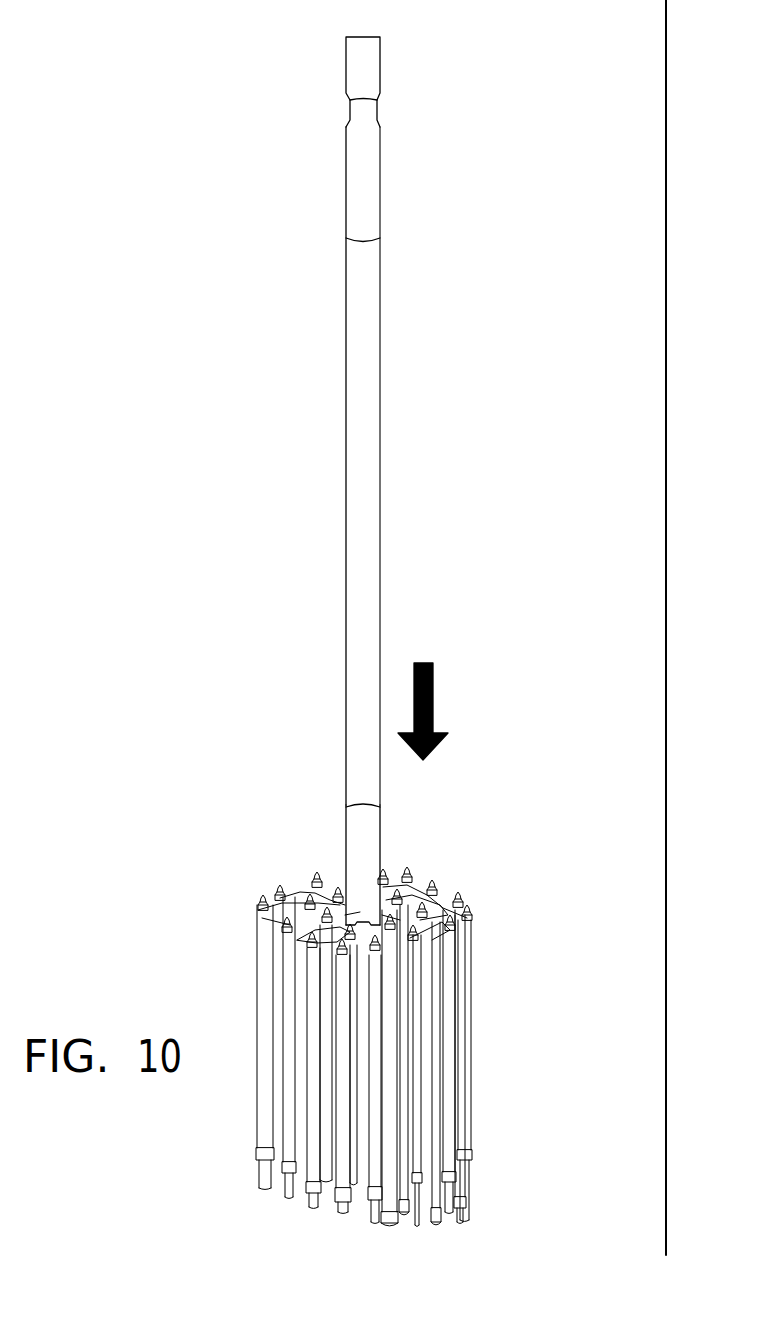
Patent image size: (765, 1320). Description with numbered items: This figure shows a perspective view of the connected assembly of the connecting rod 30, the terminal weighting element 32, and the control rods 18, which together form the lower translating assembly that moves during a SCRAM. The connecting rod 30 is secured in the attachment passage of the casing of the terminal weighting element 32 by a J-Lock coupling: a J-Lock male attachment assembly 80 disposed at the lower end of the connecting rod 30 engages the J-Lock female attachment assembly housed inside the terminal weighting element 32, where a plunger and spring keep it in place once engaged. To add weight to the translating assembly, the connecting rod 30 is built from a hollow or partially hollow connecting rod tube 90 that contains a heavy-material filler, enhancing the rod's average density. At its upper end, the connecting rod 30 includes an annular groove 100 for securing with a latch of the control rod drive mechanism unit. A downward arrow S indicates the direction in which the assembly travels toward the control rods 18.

The annular groove 100 is at (368, 110).
The connecting rod 30 is at (380, 472).
The connecting rod tube 90 is at (351, 513).
The J-Lock male attachment assembly 80 is at (345, 860).
The insertion direction S is at (433, 700).
The terminal weighting element 32 is at (505, 977).
The control rods 18 is at (468, 1217).